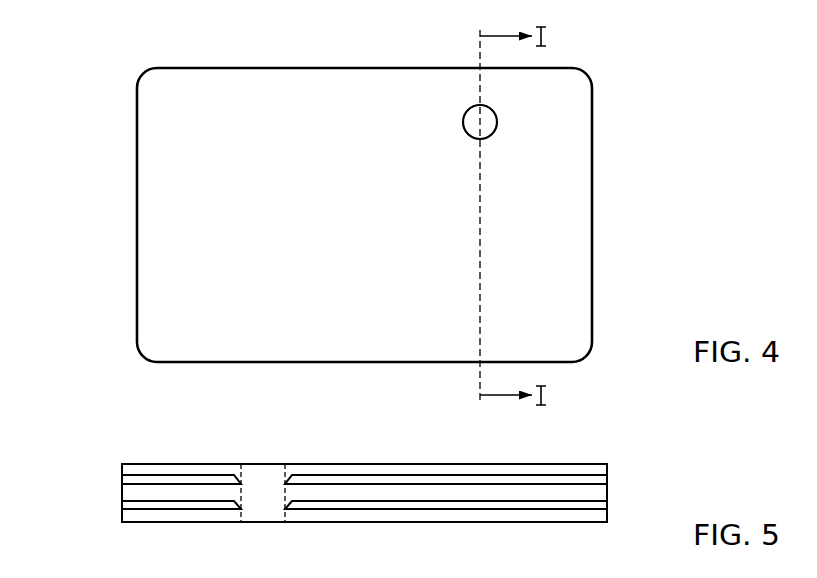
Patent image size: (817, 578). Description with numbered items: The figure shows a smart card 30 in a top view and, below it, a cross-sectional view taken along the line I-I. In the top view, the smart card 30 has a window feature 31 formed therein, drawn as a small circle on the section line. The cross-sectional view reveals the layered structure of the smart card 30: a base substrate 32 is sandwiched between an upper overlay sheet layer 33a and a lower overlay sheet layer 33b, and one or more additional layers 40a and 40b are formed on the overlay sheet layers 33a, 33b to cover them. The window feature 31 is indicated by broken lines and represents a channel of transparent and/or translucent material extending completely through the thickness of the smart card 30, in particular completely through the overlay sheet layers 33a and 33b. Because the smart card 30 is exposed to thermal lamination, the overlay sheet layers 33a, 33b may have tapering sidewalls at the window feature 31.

In FIG. 4, the smart card 30 is at (108, 72).
In FIG. 5, the smart card 30 is at (108, 436).
In FIG. 4, the window feature 31 is at (497, 122).
In FIG. 5, the window feature 31 is at (263, 491).
In FIG. 5, the base substrate 32 is at (398, 492).
In FIG. 5, the overlay sheet layer 33a is at (607, 478).
In FIG. 5, the overlay sheet layer 33b is at (607, 505).
In FIG. 5, the additional layer 40a is at (121, 472).
In FIG. 5, the additional layer 40b is at (121, 516).